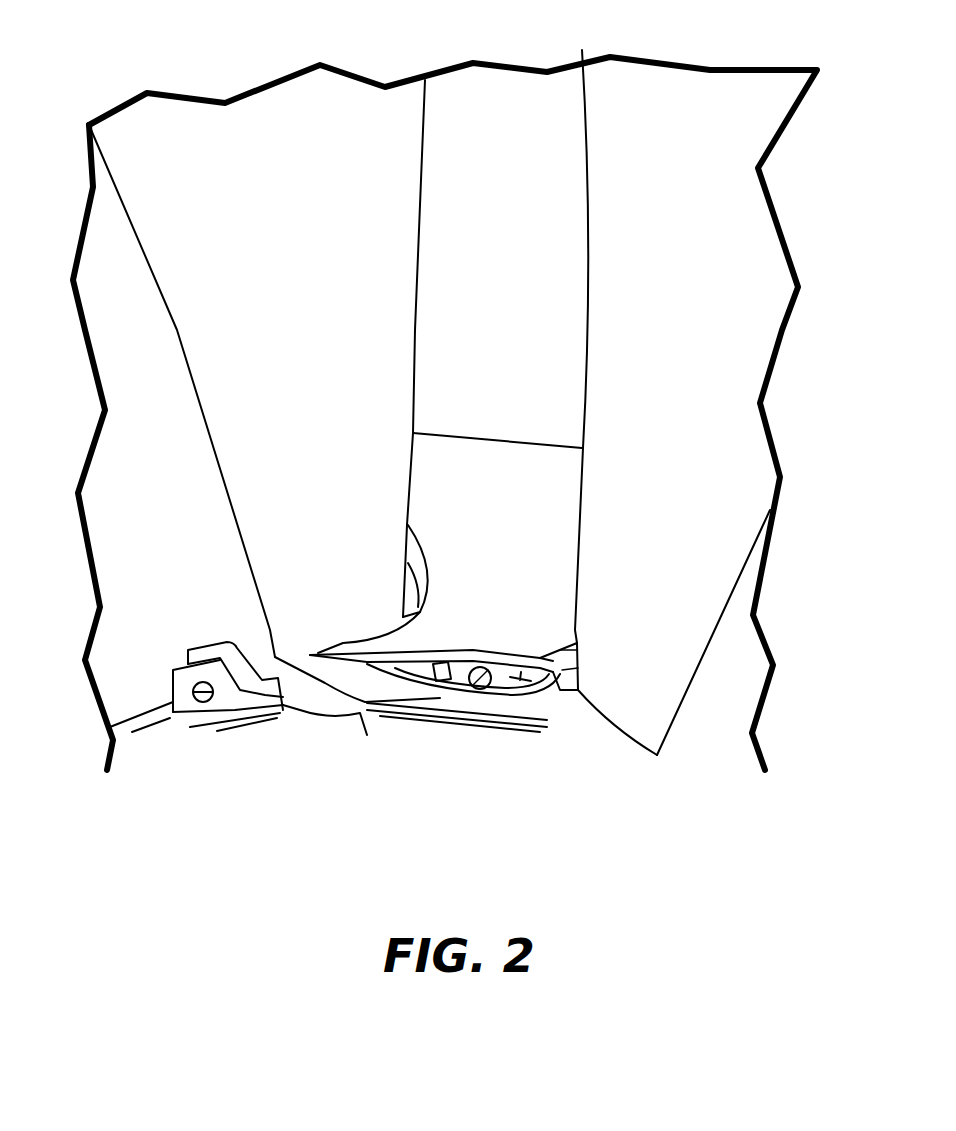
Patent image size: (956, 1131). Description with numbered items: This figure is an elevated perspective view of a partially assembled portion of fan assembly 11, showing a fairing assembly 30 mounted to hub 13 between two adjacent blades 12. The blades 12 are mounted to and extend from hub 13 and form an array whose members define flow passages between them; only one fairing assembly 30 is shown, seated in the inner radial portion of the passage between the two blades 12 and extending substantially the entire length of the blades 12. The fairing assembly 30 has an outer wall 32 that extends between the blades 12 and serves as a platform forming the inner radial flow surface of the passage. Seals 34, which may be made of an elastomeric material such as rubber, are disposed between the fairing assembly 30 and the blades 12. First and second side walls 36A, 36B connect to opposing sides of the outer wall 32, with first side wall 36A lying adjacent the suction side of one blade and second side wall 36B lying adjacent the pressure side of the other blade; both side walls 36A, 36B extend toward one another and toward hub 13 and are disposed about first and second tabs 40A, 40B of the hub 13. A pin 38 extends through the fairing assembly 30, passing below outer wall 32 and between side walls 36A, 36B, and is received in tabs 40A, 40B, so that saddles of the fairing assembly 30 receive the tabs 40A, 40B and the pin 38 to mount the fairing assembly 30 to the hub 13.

The fan assembly 11 is at (466, 108).
The blades 12 is at (220, 342).
The hub 13 is at (418, 712).
The fairing assembly 30 is at (502, 398).
The outer wall 32 is at (491, 522).
The seals 34 is at (412, 543).
The first side wall 36A is at (457, 692).
The second side wall 36B is at (527, 692).
The pin 38 is at (483, 690).
The first tab 40A is at (187, 707).
The second tab 40B is at (217, 638).